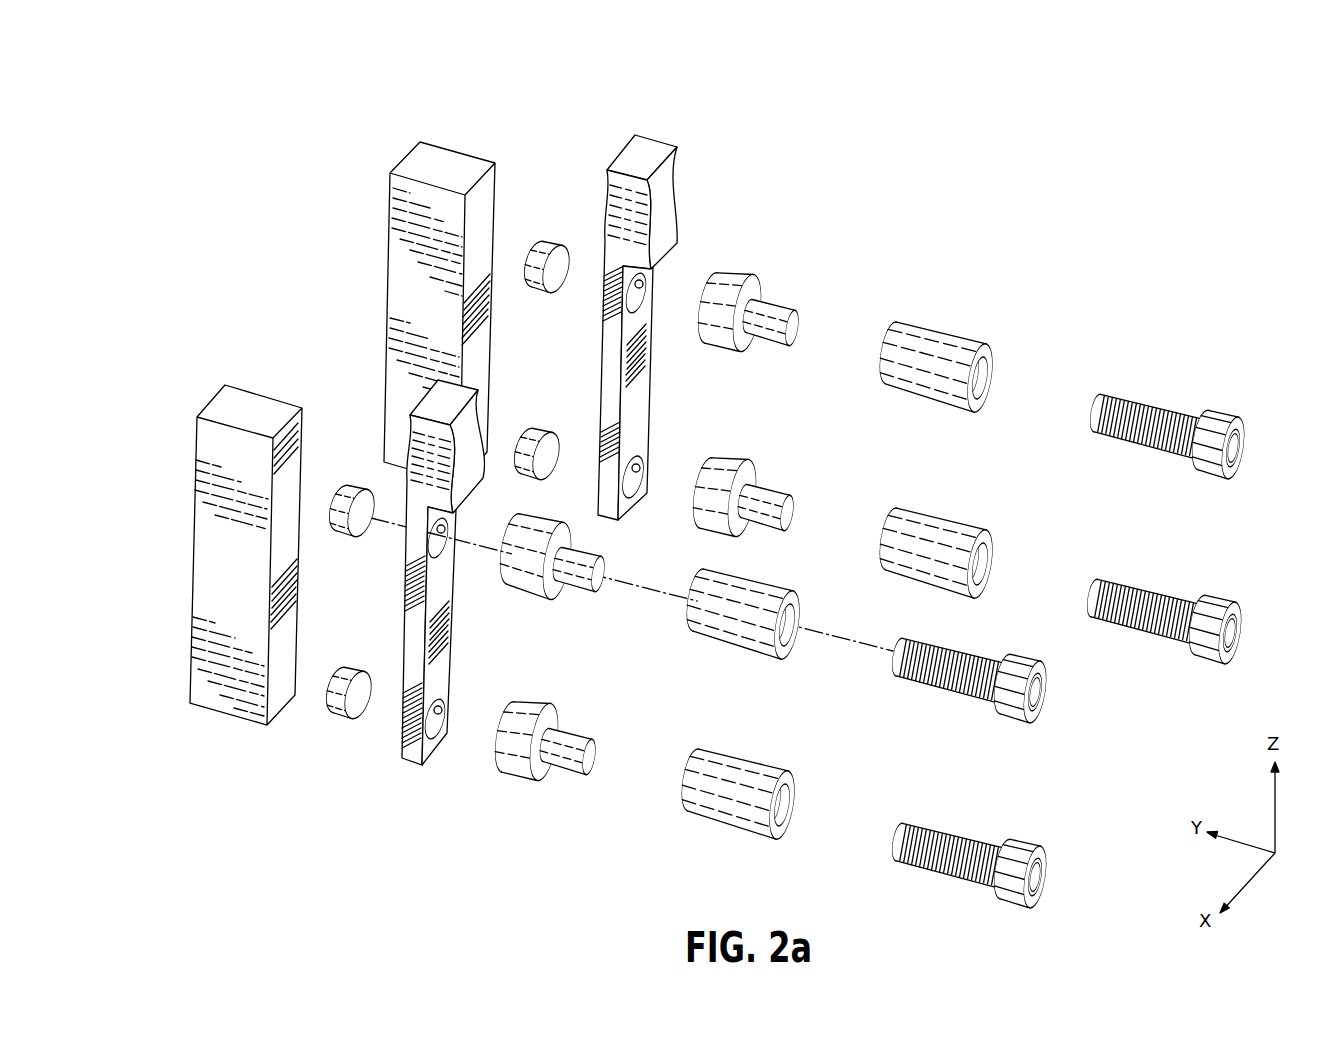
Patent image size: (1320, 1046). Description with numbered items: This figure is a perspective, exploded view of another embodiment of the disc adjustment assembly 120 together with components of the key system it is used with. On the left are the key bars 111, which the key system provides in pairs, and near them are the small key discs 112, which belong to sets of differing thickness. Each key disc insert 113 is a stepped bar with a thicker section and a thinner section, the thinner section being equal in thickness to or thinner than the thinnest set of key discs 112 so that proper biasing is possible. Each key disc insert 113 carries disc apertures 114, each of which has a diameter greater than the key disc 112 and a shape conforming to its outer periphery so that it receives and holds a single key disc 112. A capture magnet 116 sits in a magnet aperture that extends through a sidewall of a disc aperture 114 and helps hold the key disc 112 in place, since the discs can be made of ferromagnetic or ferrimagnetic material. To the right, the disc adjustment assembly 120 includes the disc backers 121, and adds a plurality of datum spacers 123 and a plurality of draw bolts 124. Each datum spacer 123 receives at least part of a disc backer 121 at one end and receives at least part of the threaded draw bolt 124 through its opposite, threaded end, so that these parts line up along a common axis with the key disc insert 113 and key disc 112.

The key bar 111 is at (445, 148).
The key disc 112 is at (549, 245).
The key disc insert 113 is at (657, 140).
The disc aperture 114 is at (644, 286).
The capture magnet 116 is at (452, 695).
The disc adjustment assembly 120 is at (947, 192).
The disc backer 121 is at (747, 272).
The datum spacer 123 is at (957, 335).
The draw bolt 124 is at (1173, 408).